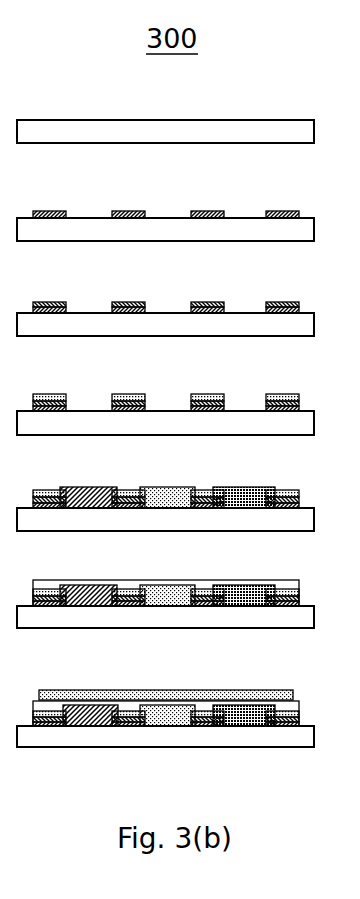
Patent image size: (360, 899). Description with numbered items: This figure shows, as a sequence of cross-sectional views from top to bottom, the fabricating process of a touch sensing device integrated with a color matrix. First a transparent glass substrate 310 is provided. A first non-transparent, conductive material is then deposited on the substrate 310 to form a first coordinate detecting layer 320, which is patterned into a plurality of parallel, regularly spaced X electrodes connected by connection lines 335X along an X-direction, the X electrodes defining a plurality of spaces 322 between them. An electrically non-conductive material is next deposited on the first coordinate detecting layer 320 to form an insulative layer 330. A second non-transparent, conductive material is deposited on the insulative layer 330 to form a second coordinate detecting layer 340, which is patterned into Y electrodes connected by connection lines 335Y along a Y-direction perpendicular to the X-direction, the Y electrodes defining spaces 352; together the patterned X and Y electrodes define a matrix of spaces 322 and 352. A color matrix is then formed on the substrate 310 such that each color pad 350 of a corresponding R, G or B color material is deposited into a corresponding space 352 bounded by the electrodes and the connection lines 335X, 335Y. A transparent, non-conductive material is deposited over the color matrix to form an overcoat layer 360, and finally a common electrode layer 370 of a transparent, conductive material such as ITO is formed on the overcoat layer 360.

The transparent glass substrate 310 is at (235, 132).
The first coordinate detecting layer 320 is at (309, 213).
The spaces 322 is at (173, 207).
The insulative layer 330 is at (126, 302).
The connection lines 335X is at (50, 211).
The connection lines 335Y is at (50, 394).
The second coordinate detecting layer 340 is at (309, 400).
The color pad 350 is at (165, 497).
The spaces 352 is at (174, 389).
The overcoat layer 360 is at (285, 586).
The common electrode layer 370 is at (197, 696).